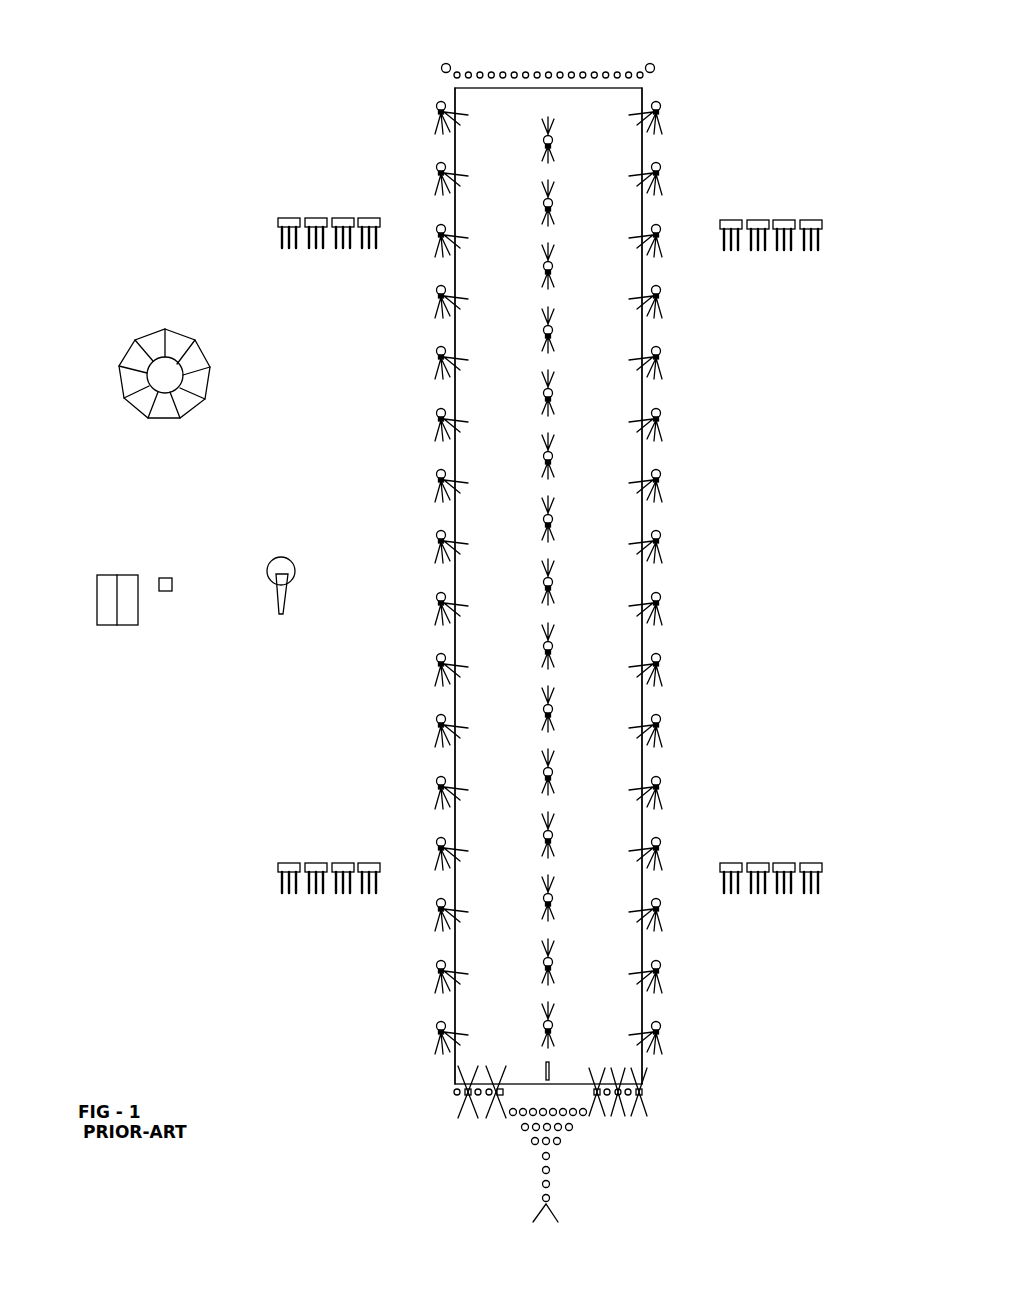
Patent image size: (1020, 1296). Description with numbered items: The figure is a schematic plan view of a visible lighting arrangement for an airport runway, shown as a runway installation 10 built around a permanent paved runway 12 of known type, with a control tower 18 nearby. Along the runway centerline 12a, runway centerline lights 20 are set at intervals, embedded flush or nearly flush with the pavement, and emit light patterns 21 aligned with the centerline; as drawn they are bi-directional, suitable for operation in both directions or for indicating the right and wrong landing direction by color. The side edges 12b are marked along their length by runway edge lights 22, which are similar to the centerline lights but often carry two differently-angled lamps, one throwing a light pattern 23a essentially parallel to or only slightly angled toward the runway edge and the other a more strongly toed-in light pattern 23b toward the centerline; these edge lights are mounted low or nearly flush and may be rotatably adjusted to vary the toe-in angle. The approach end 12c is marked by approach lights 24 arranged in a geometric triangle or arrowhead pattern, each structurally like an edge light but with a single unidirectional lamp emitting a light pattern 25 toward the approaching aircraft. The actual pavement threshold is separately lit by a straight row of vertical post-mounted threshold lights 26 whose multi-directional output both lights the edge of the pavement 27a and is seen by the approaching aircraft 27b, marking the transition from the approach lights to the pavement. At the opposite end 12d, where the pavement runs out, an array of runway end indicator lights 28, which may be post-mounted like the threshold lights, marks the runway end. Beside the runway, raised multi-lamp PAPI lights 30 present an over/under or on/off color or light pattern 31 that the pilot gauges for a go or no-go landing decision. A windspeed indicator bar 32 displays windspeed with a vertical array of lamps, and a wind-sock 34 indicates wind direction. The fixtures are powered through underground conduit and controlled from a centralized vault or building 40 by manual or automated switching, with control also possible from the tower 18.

The runway installation 10 is at (185, 233).
The paved runway 12 is at (630, 644).
The runway centerline 12a is at (555, 745).
The side edges 12b is at (455, 326).
The approach end / threshold 12c is at (562, 1086).
The end of the runway 12d is at (537, 88).
The control tower 18 is at (150, 330).
The runway centerline lights 20 is at (553, 202).
The light patterns 21 is at (548, 135).
The runway edge lights 22 is at (661, 228).
The light pattern 23a is at (662, 240).
The toed-in light pattern 23b is at (640, 235).
The approach lights 24 is at (542, 1168).
The light pattern 25 is at (560, 1218).
The threshold lights 26 is at (454, 1092).
The pavement edge light pattern 27a is at (500, 1068).
The approach-visible light pattern 27b is at (490, 1118).
The runway end indicator lights 28 is at (458, 72).
The PAPI lights 30 is at (310, 863).
The light pattern 31 is at (312, 893).
The windspeed indicator bar 32 is at (172, 584).
The wind-sock 34 is at (288, 597).
The vault or building 40 is at (105, 575).